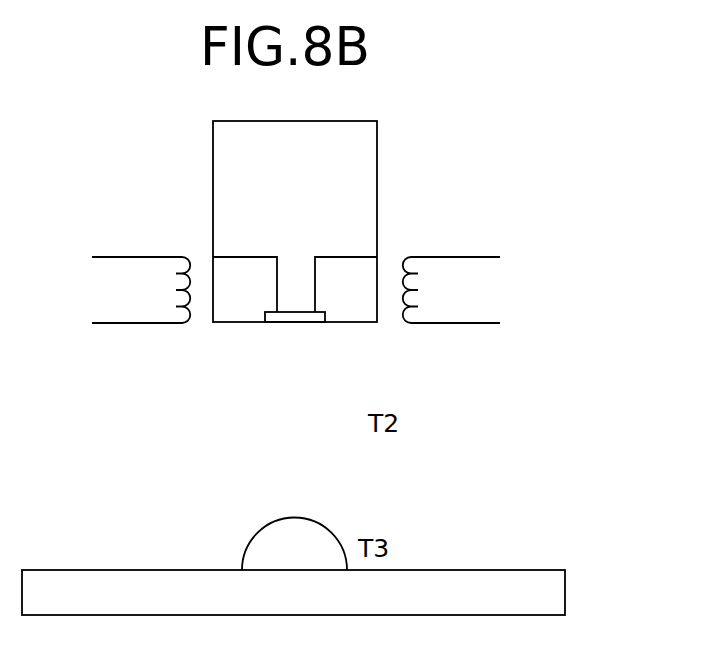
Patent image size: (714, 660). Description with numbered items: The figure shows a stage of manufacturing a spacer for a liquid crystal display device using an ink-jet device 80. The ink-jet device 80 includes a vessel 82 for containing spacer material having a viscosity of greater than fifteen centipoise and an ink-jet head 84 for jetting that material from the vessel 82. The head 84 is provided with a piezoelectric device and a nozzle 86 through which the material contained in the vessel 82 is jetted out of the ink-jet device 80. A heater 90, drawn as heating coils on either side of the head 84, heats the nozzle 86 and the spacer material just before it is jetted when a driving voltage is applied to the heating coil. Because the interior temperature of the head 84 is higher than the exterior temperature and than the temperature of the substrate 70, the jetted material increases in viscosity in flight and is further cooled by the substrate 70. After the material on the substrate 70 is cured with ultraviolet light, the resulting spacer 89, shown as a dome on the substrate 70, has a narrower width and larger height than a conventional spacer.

The ink-jet device 80 is at (200, 206).
The vessel 82 is at (368, 181).
The ink-jet head 84 is at (353, 308).
The nozzle 86 is at (290, 303).
The heater 90 is at (135, 310).
The substrate 70 is at (559, 589).
The spacer 89 is at (312, 532).